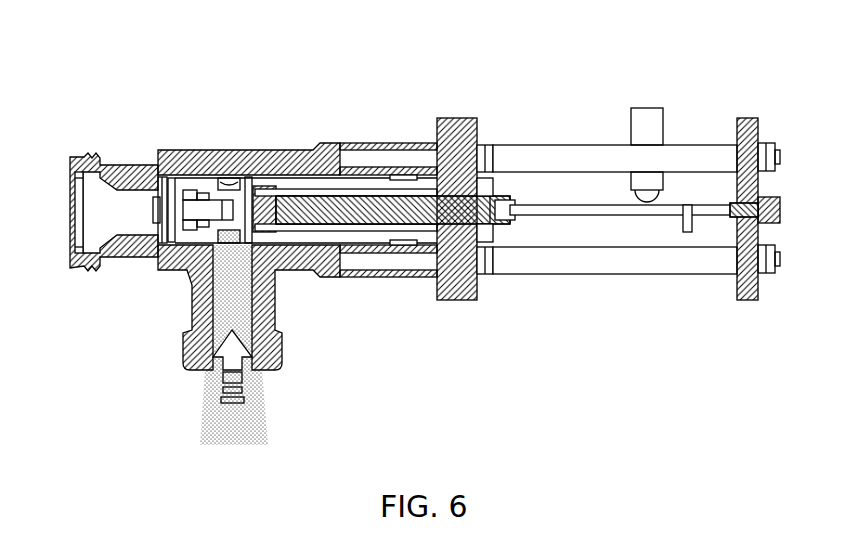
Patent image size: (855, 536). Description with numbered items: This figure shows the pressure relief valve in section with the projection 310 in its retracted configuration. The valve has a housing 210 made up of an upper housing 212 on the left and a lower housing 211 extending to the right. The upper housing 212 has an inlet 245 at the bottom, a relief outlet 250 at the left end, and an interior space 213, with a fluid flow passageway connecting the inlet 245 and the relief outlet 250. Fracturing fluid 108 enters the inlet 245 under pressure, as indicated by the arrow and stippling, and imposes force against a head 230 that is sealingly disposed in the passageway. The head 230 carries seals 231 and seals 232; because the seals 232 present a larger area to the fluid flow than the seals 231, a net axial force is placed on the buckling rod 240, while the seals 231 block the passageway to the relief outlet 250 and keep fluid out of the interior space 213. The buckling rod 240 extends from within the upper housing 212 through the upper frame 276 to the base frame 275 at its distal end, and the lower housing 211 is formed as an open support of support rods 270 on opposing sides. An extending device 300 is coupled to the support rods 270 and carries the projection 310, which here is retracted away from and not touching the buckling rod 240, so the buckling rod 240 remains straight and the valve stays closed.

The fracturing fluid 108 is at (258, 435).
The housing 210 is at (378, 103).
The lower housing 211 is at (510, 103).
The upper housing 212 is at (328, 123).
The interior space 213 is at (402, 192).
The head 230 is at (200, 208).
The seals 231 is at (167, 190).
The seals 232 is at (252, 185).
The buckling rod 240 is at (597, 215).
The inlet 245 is at (250, 376).
The relief outlet 250 is at (62, 186).
The support rods 270 is at (543, 156).
The base frame 275 is at (748, 300).
The upper frame 276 is at (457, 300).
The extending device 300 is at (674, 82).
The projection 310 is at (647, 205).